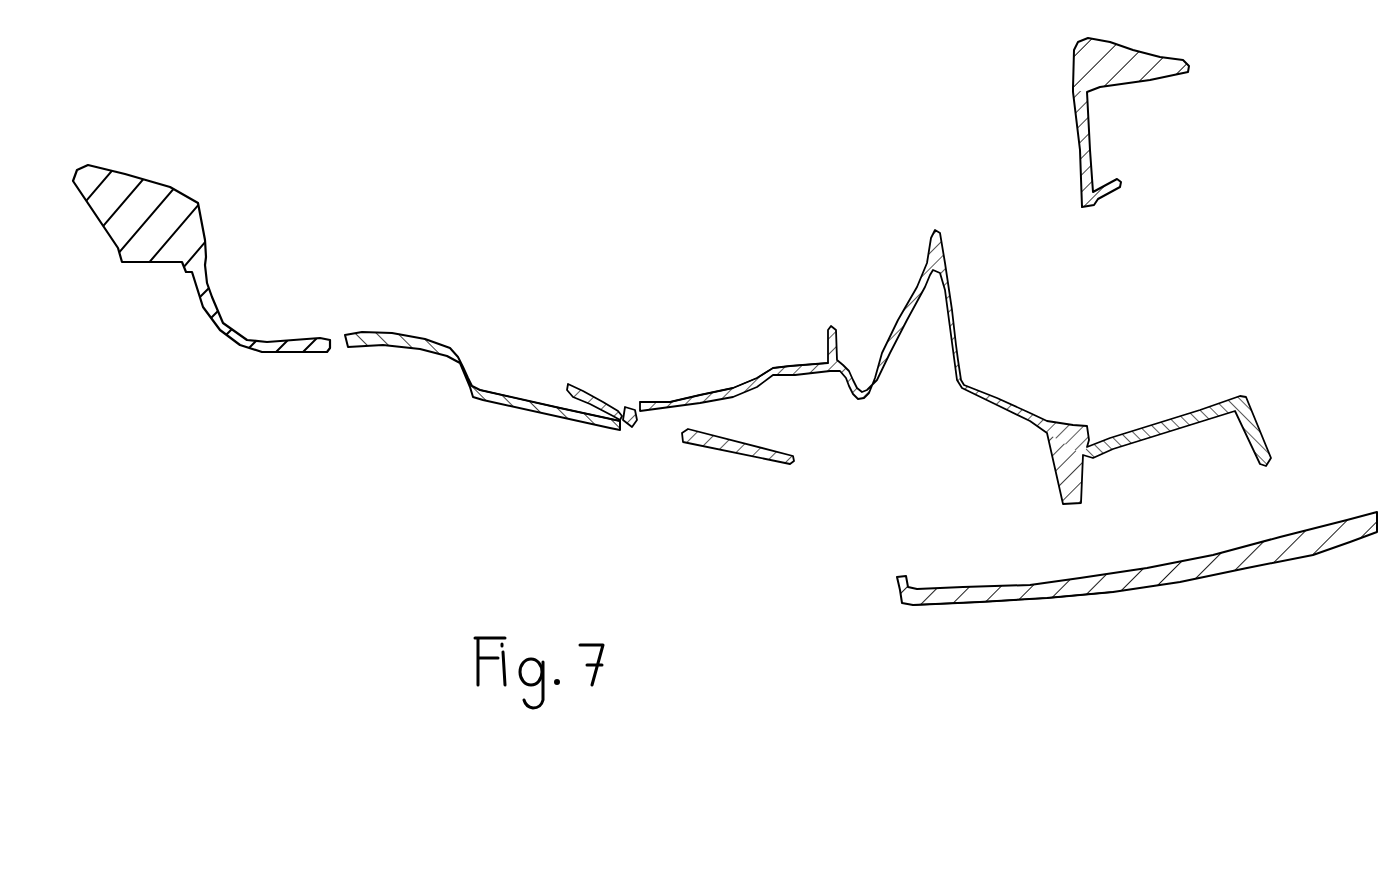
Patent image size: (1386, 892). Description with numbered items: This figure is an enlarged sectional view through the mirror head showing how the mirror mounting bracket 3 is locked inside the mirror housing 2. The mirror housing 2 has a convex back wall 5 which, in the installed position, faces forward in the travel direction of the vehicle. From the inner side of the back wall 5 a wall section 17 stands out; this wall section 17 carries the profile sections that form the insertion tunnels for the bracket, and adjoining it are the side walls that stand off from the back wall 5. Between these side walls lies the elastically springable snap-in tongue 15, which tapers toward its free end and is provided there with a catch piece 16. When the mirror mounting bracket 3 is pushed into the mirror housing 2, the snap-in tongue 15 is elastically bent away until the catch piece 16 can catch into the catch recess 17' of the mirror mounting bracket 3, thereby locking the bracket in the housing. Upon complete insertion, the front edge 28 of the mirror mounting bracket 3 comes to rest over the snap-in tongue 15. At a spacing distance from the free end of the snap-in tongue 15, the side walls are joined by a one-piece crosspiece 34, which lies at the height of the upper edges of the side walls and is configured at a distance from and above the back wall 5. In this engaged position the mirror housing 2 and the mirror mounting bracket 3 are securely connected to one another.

The mirror housing 2 is at (1257, 575).
The mirror mounting bracket 3 is at (803, 366).
The back wall 5 is at (1047, 597).
The snap-in tongue 15 is at (545, 408).
The catch piece 16 is at (632, 427).
The wall section 17 is at (482, 330).
The catch recess 17' is at (732, 339).
The front edge 28 is at (568, 385).
The crosspiece 34 is at (748, 452).